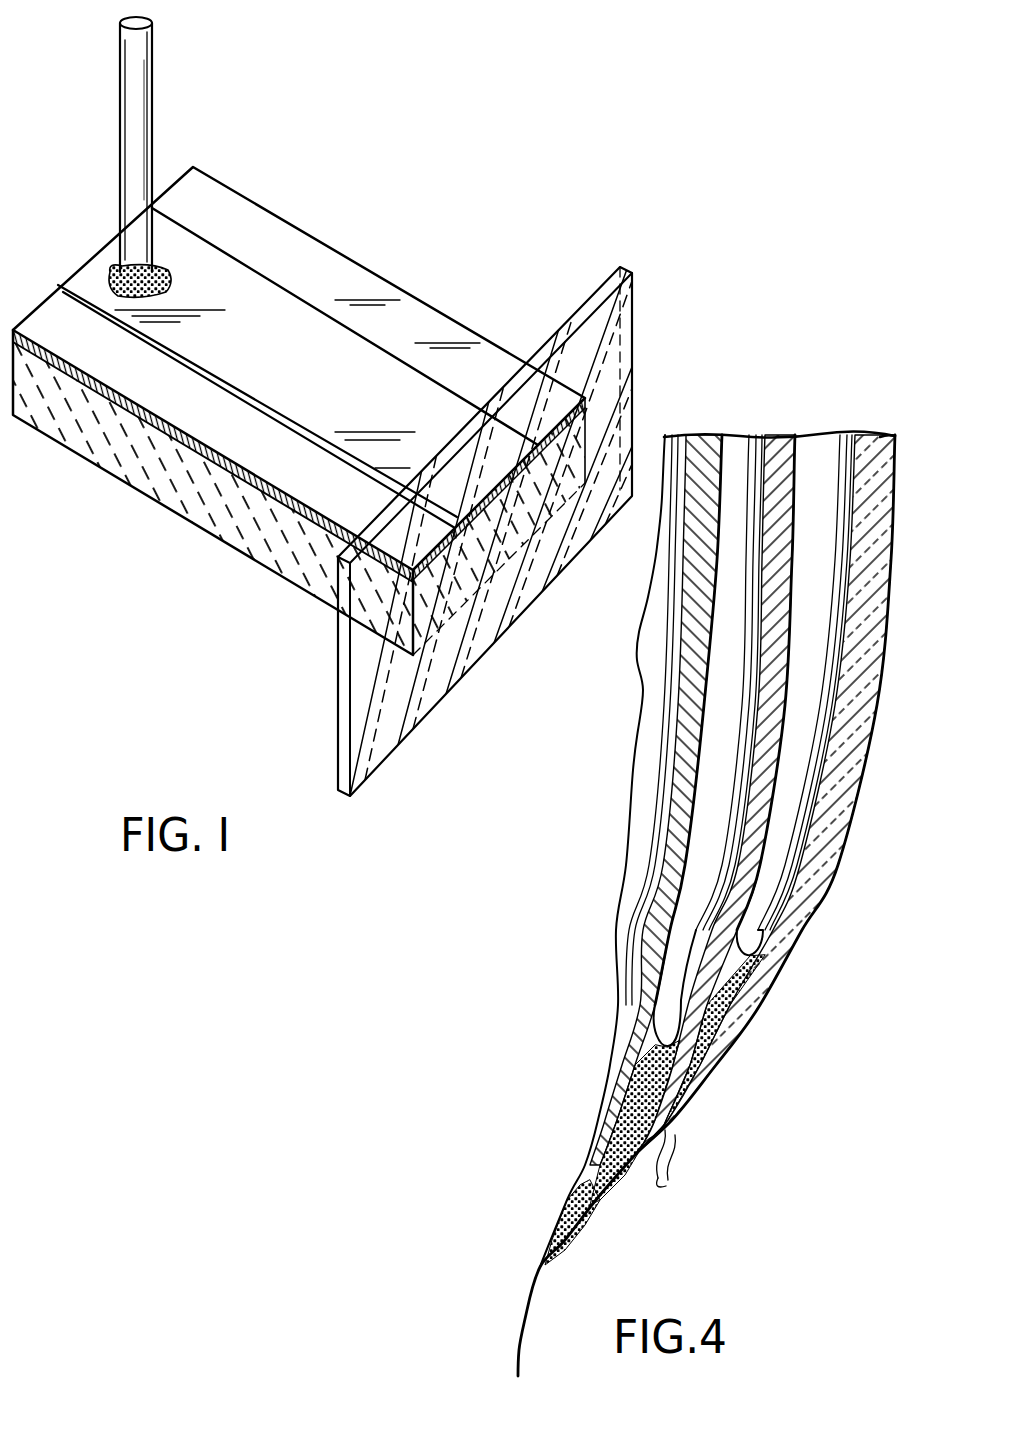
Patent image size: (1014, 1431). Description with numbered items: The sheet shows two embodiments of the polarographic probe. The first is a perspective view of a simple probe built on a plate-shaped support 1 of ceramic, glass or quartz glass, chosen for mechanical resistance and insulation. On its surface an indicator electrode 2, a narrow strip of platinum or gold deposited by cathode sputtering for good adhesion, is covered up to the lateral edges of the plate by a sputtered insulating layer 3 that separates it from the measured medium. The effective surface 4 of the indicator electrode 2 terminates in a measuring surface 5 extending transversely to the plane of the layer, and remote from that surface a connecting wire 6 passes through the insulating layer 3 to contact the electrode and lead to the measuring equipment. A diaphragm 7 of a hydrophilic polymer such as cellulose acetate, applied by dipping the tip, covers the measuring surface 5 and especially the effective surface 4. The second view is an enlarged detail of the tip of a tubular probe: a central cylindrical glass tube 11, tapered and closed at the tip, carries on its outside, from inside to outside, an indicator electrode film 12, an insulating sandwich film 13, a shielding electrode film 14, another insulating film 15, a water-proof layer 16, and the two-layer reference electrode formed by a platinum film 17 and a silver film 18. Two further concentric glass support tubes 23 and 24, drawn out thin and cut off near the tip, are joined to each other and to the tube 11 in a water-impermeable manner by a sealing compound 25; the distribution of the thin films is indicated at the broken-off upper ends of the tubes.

In FIG. 1, the plate-shaped support 1 is at (122, 462).
In FIG. 1, the indicator electrode 2 is at (475, 500).
In FIG. 1, the insulating layer 3 is at (233, 472).
In FIG. 1, the effective surface 4 is at (533, 467).
In FIG. 1, the measuring surface 5 is at (463, 585).
In FIG. 1, the connecting wire 6 is at (147, 100).
In FIG. 1, the diaphragm 7 is at (612, 314).
In FIG. 4, the cylindrical glass tube 11 is at (677, 816).
In FIG. 4, the indicator electrode film 12 is at (722, 437).
In FIG. 4, the insulating sandwich film 13 is at (733, 434).
In FIG. 4, the shielding electrode film 14 is at (797, 436).
In FIG. 4, the insulating film 15 is at (810, 434).
In FIG. 4, the water-proof layer 16 is at (895, 436).
In FIG. 4, the platinum film 17 is at (903, 434).
In FIG. 4, the silver film 18 is at (905, 440).
In FIG. 4, the outer support tube 23 is at (760, 818).
In FIG. 4, the outer support tube 24 is at (838, 843).
In FIG. 4, the sealing compound 25 is at (560, 1225).